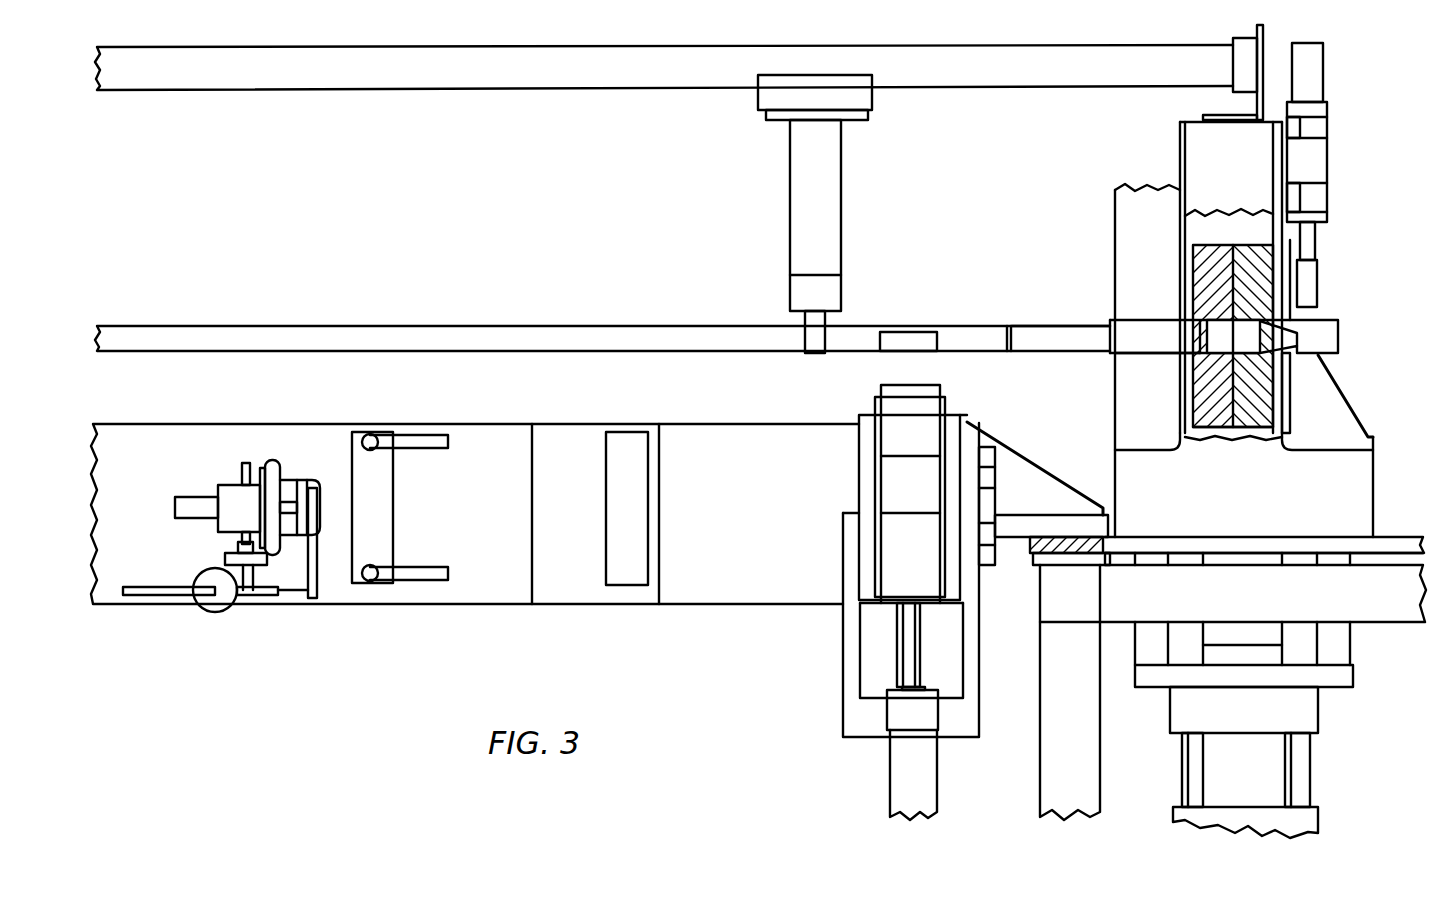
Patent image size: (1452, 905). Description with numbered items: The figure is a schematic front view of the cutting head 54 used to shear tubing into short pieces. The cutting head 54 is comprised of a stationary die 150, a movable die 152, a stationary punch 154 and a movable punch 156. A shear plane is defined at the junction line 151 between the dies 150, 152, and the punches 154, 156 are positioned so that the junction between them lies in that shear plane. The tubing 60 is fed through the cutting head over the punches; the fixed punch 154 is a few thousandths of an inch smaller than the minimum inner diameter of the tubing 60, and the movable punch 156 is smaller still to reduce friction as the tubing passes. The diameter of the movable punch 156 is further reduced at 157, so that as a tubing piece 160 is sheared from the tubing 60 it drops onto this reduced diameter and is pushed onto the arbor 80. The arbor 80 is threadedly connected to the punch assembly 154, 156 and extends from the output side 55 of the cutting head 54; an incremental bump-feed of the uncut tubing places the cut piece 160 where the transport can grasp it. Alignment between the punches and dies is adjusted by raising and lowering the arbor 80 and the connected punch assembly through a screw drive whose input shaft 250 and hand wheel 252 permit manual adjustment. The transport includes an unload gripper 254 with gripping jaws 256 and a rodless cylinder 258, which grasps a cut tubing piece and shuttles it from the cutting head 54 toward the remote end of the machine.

The cutting head 54 is at (1180, 137).
The output side 55 is at (1115, 268).
The tubing 60 is at (1338, 332).
The arbor 80 is at (427, 320).
The stationary die 150 is at (1283, 422).
The junction line 151 is at (1228, 263).
The movable die 152 is at (1210, 432).
The stationary punch 154 is at (1253, 333).
The movable punch 156 is at (1215, 328).
The reduced diameter 157 is at (1070, 326).
The cut tubing piece 160 is at (1150, 356).
The input shaft 250 is at (272, 460).
The hand wheel 252 is at (227, 555).
The unload gripper 254 is at (792, 172).
The gripping jaws 256 is at (790, 298).
The rodless cylinder 258 is at (428, 90).